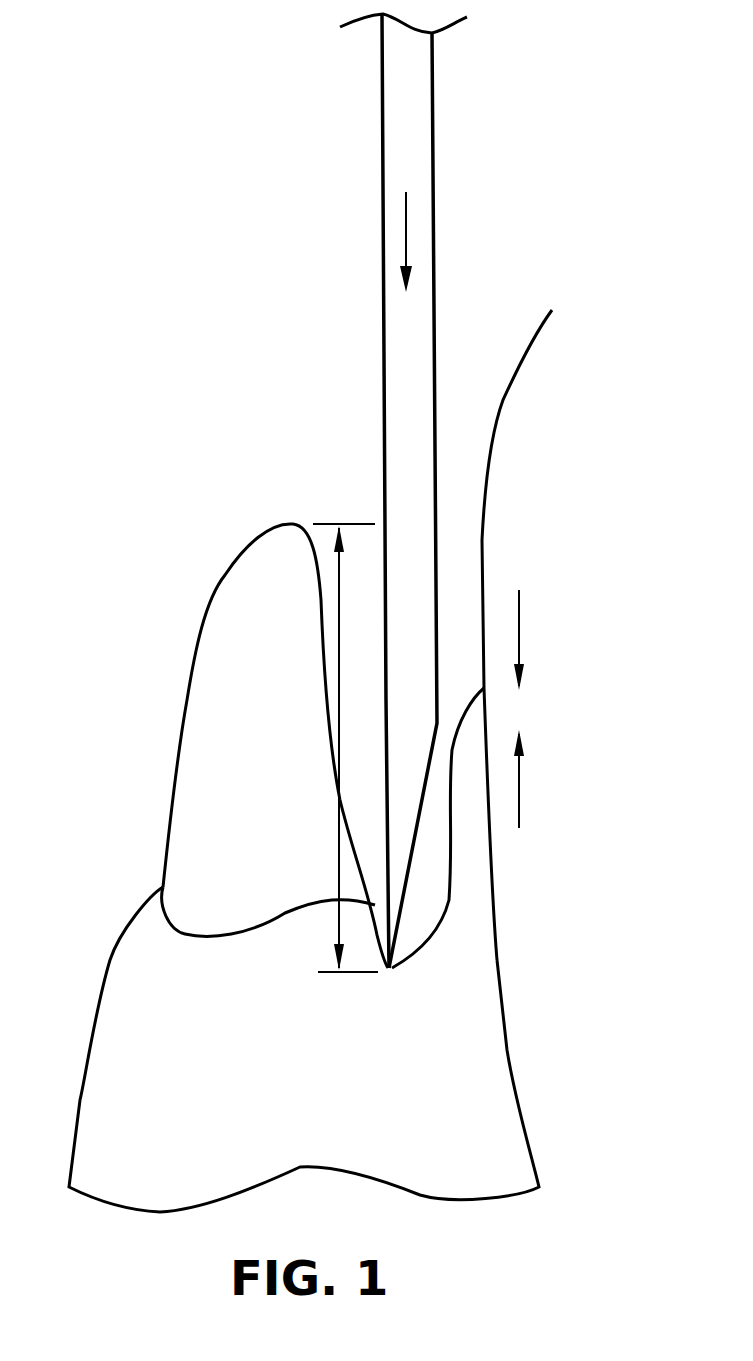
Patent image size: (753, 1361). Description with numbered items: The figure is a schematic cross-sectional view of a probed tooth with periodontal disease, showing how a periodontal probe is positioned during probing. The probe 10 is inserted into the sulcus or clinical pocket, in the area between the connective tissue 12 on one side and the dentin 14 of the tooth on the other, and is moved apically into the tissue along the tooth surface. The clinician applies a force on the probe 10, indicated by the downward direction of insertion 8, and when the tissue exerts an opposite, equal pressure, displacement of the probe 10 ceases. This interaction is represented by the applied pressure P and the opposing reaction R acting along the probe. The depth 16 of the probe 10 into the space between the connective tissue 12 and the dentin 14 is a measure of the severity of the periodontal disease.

The insertion direction arrow 8 is at (408, 224).
The probe 10 is at (384, 382).
The connective tissue 12 is at (190, 694).
The dentin 14 is at (552, 395).
The depth 16 is at (335, 750).
The pressing force P is at (521, 626).
The reaction force R is at (521, 788).